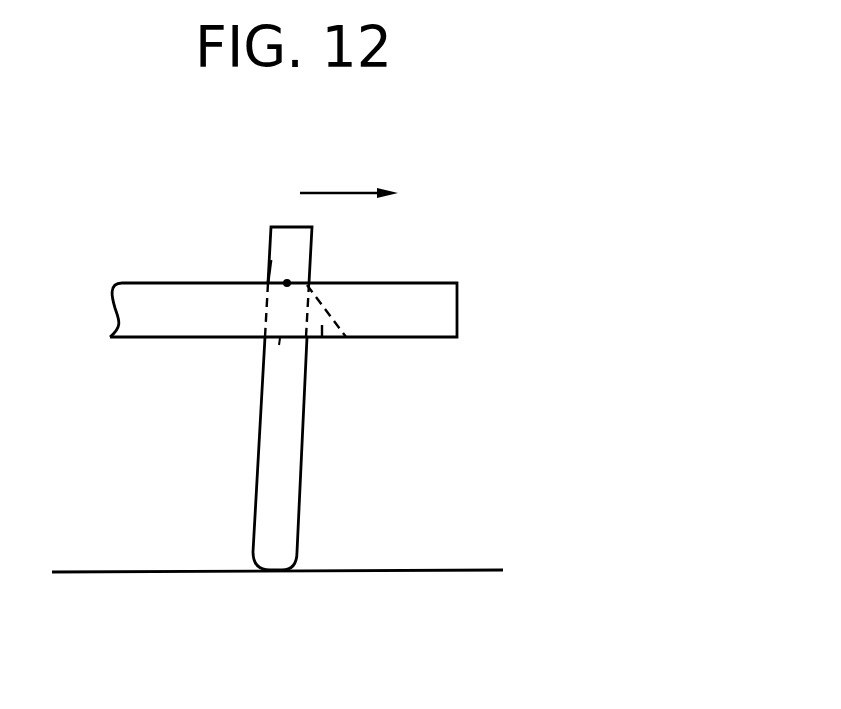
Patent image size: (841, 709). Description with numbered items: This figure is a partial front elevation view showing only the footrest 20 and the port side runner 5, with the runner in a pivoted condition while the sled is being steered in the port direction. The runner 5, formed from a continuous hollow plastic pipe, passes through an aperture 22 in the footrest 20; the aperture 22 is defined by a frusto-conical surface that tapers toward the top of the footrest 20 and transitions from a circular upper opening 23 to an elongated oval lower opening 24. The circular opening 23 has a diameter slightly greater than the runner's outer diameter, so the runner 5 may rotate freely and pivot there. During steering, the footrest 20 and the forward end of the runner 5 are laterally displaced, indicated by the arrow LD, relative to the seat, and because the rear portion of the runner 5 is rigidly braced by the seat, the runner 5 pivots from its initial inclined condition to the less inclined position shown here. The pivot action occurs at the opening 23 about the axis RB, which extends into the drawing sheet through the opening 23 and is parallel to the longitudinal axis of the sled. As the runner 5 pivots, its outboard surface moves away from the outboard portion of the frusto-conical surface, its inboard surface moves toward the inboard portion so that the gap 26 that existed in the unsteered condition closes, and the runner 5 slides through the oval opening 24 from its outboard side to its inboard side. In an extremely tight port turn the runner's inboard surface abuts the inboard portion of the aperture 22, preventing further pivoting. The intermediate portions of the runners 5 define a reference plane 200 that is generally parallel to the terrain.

The footrest 20 is at (425, 283).
The runner 5 is at (305, 420).
The axis RB is at (287, 280).
The lateral displacement LD is at (349, 176).
The upper opening 23 is at (270, 281).
The aperture 22 is at (323, 304).
The gap 26 is at (322, 338).
The lower opening 24 is at (280, 338).
The reference plane 200 is at (423, 572).